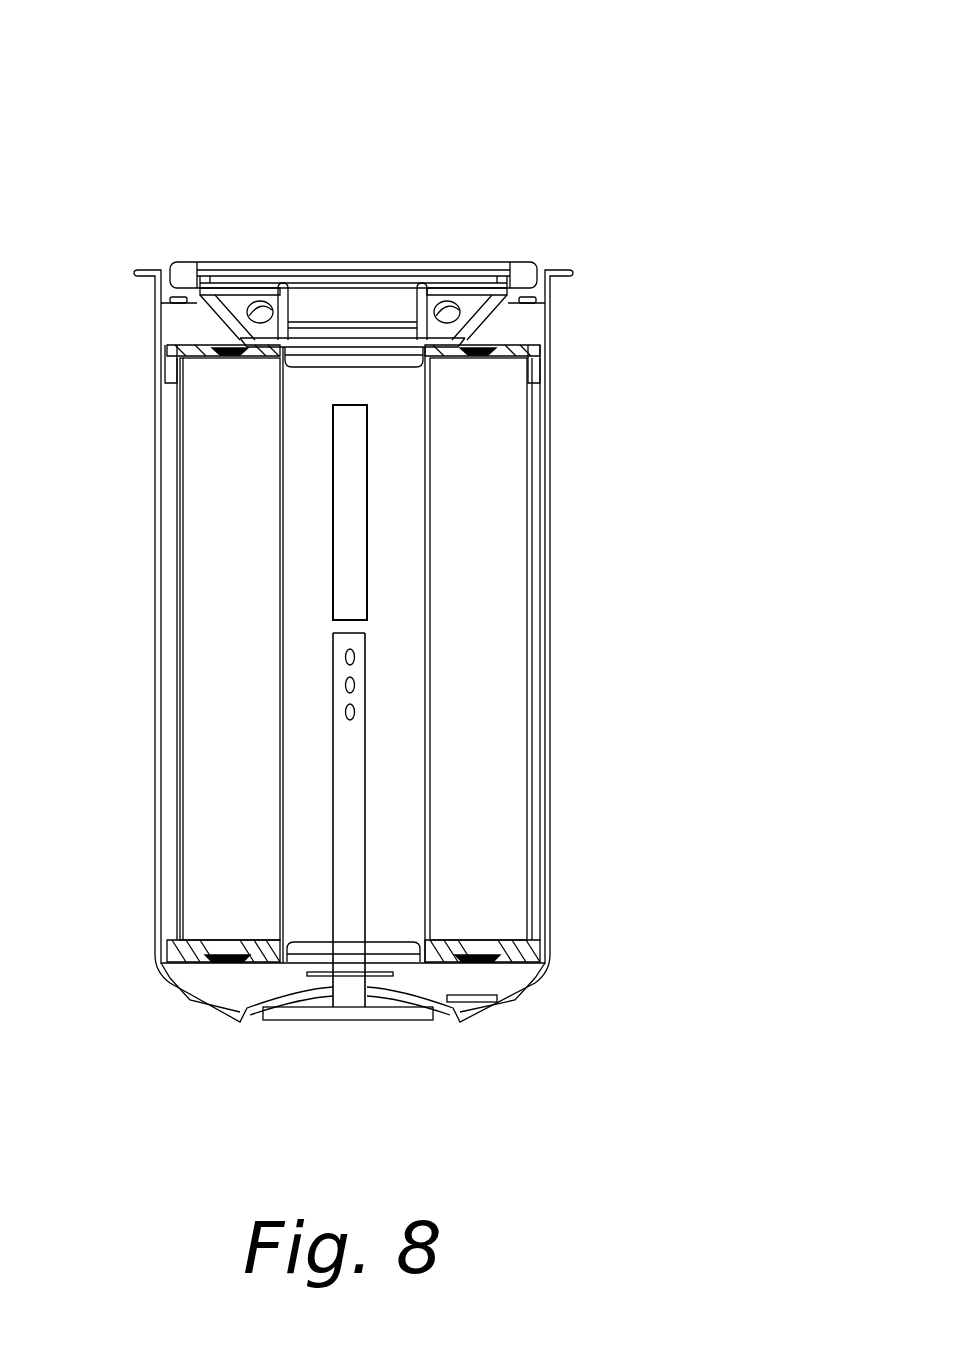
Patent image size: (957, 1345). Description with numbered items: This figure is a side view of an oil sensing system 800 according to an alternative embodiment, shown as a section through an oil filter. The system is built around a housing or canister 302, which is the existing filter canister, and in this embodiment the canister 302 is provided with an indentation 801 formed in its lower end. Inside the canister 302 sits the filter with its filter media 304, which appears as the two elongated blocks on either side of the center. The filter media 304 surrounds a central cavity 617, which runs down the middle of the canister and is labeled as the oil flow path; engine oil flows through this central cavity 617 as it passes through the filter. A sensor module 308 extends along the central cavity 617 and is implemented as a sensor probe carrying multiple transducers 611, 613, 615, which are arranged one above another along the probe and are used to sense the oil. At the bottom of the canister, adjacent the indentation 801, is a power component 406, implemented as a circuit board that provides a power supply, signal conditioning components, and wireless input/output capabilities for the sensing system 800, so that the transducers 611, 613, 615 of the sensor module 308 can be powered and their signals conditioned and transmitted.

The oil sensing system 800 is at (623, 124).
The housing or canister 302 is at (550, 805).
The filter media 304 is at (500, 433).
The sensor module 308 is at (355, 797).
The central cavity 617 is at (353, 382).
The transducer 611 is at (340, 657).
The transducer 613 is at (340, 689).
The transducer 615 is at (340, 714).
The indentation 801 is at (432, 982).
The power component 406 is at (398, 1035).